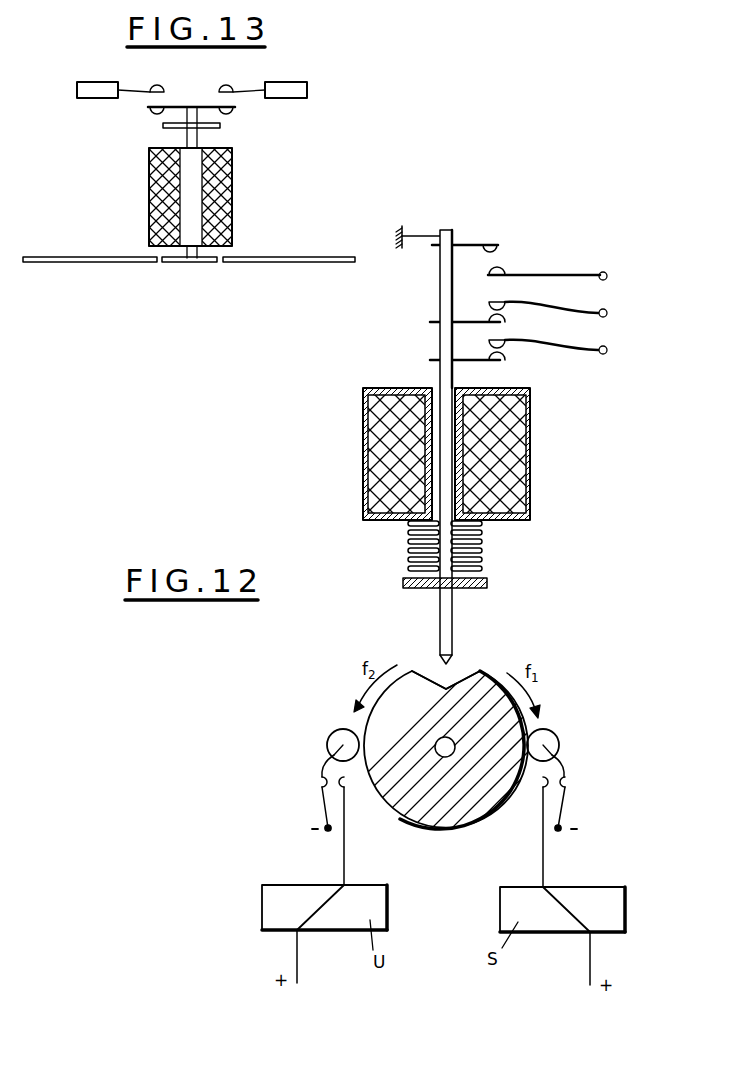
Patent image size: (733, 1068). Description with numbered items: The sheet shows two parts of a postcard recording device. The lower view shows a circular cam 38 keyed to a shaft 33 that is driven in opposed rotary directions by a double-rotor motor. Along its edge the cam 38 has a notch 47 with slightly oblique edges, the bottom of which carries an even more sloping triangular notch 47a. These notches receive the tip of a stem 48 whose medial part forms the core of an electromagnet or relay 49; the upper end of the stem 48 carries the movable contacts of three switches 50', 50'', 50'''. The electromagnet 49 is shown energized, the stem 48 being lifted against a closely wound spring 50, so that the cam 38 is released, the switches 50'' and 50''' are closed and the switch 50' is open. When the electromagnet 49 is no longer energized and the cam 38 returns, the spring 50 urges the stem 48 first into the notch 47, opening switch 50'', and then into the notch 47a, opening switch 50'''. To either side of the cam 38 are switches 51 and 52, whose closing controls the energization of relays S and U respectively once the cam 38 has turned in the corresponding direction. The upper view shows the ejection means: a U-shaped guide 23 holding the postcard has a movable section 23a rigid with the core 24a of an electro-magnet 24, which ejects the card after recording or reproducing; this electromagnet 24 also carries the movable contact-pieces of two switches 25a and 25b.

In FIG. 13, the U-shaped guide 23 is at (80, 258).
In FIG. 13, the movable section 23a is at (203, 262).
In FIG. 13, the electro-magnet 24 is at (222, 198).
In FIG. 13, the core 24a is at (197, 164).
In FIG. 13, the switch 25a is at (288, 88).
In FIG. 13, the switch 25b is at (85, 87).
In FIG. 12, the shaft 33 is at (445, 757).
In FIG. 12, the cam 38 is at (403, 783).
In FIG. 12, the notch 47 is at (470, 672).
In FIG. 12, the triangular notch 47a is at (446, 687).
In FIG. 12, the stem 48 is at (450, 447).
In FIG. 12, the electromagnet 49 is at (400, 452).
In FIG. 12, the closely wound spring 50 is at (464, 554).
In FIG. 12, the switch 50' is at (490, 251).
In FIG. 12, the switch 50'' is at (518, 316).
In FIG. 12, the switch 50''' is at (518, 354).
In FIG. 12, the switch 51 is at (574, 773).
In FIG. 12, the switch 52 is at (316, 773).